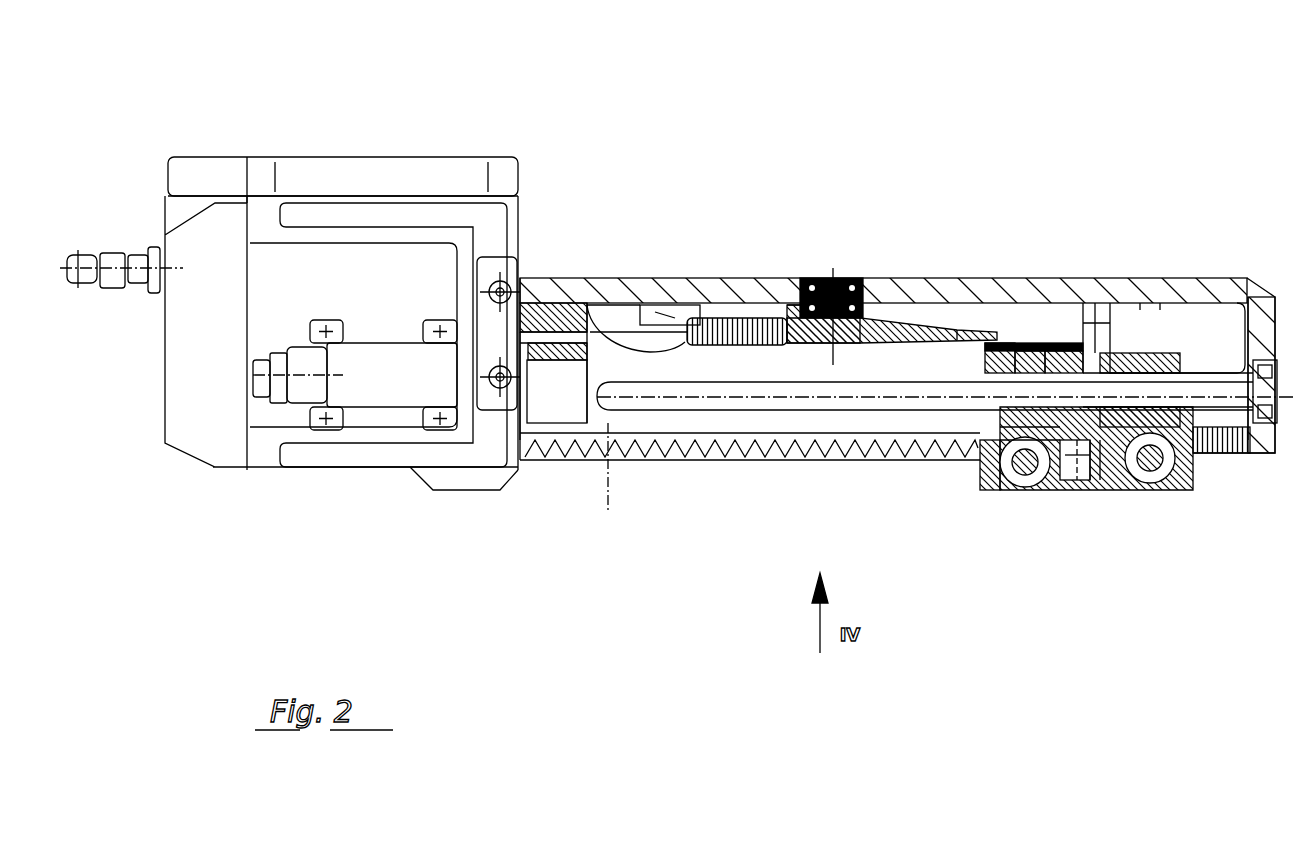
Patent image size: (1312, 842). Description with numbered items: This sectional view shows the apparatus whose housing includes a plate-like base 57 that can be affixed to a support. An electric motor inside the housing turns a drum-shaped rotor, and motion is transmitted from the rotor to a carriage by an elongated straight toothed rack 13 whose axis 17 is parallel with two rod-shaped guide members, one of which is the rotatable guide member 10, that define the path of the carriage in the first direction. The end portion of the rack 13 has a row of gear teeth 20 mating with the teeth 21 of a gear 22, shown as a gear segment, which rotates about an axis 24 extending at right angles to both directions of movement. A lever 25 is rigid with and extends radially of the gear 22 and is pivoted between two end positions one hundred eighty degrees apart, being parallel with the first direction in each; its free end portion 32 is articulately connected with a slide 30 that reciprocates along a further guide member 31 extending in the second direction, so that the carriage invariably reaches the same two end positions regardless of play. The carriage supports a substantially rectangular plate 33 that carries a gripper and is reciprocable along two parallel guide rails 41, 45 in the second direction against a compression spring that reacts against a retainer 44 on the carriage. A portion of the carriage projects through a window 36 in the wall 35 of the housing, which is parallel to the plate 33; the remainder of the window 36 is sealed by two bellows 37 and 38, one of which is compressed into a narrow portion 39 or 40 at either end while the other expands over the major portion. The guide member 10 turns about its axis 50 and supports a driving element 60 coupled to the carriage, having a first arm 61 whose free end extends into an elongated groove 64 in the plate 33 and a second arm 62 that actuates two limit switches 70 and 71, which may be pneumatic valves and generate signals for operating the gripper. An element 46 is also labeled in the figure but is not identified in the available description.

The plate-like base 57 is at (347, 173).
The axis of the rack 17 is at (610, 332).
The limit switch 71 is at (645, 305).
The teeth of the gear 21 is at (677, 280).
The lever 25 is at (815, 282).
The toothed rack 13 is at (635, 346).
The gear teeth 20 is at (660, 305).
The gear 22 is at (790, 325).
The axis of the gear 24 is at (820, 330).
The driving element 60 is at (985, 343).
The guide member 31 is at (995, 343).
The free end portion of the lever 32 is at (1012, 343).
The slide 30 is at (1045, 352).
The limit switch 70 is at (1075, 313).
The second arm 62 is at (1152, 297).
The end cap 46 is at (1200, 293).
The window 36 is at (610, 480).
The narrow portion of the window 40 is at (587, 485).
The axis of the guide member 50 is at (707, 397).
The bellows 37 is at (787, 460).
The wall of the housing 35 is at (893, 457).
The object supporting device 33 is at (980, 490).
The guide rail 45 is at (1025, 508).
The retainer 44 is at (1077, 490).
The arm 61 is at (1100, 490).
The groove 64 is at (1107, 490).
The guide rail 41 is at (1148, 490).
The guide member 10 is at (1180, 490).
The narrow portion of the window 39 is at (1250, 490).
The bellows 38 is at (1285, 430).